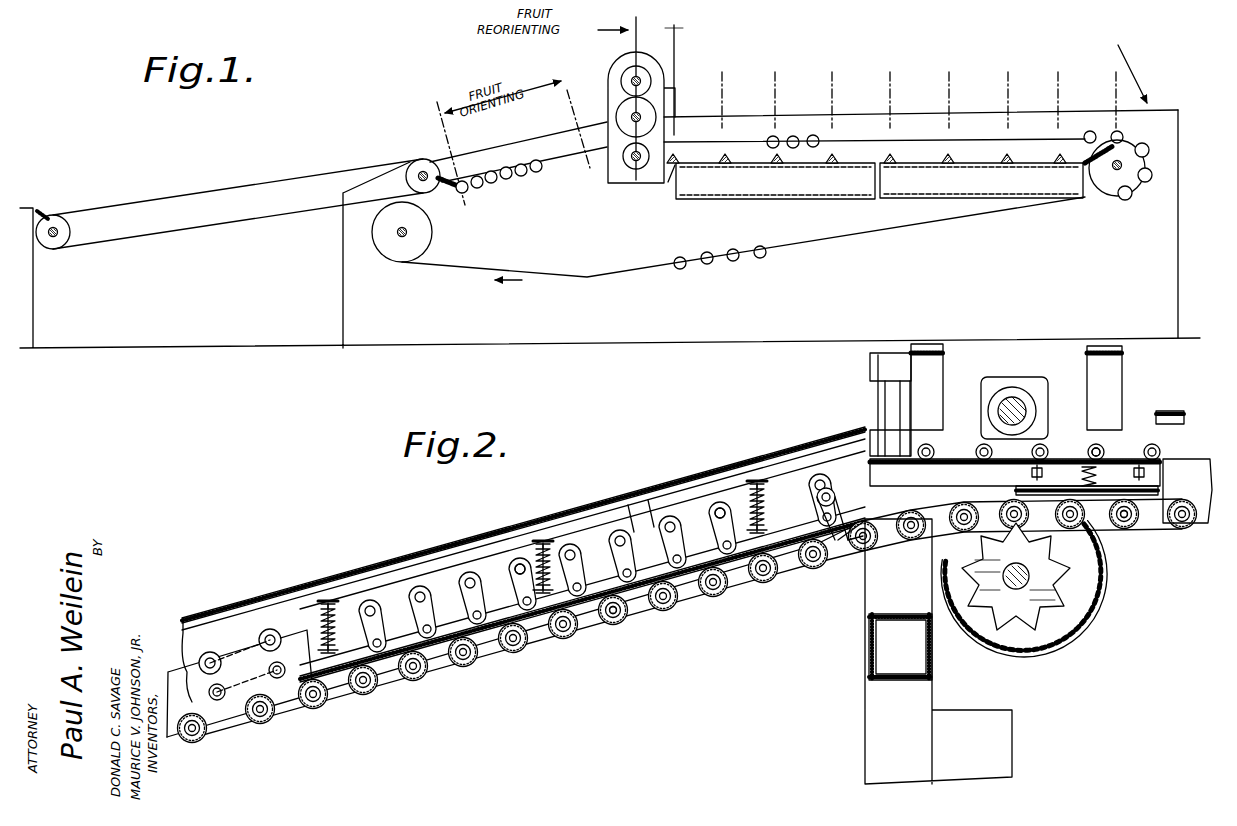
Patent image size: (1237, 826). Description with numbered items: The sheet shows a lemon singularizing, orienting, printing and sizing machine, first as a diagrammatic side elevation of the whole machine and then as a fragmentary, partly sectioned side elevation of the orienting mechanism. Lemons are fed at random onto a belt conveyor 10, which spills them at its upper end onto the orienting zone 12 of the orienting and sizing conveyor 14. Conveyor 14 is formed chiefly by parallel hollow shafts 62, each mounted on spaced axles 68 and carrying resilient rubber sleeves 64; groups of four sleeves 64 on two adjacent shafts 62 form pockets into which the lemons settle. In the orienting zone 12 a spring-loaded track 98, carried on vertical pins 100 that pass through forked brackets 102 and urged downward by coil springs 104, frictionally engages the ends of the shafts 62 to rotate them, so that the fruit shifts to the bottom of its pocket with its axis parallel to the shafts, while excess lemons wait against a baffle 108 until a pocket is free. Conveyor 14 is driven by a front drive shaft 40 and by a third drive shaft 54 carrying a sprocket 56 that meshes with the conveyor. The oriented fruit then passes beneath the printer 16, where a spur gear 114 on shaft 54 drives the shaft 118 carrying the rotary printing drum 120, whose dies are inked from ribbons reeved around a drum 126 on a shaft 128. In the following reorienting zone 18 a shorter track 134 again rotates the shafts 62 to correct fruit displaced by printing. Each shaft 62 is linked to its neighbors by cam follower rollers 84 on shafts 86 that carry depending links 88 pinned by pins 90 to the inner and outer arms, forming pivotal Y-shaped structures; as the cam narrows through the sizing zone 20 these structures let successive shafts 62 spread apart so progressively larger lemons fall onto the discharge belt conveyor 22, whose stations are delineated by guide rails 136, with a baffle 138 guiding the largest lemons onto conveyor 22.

In FIG. 1, the belt conveyor 10 is at (155, 197).
In FIG. 1, the orienting zone 12 is at (458, 140).
In FIG. 2, the orienting zone 12 is at (367, 523).
In FIG. 1, the orienting and sizing conveyor 14 is at (470, 262).
In FIG. 2, the orienting and sizing conveyor 14 is at (300, 714).
In FIG. 1, the printer 16 is at (608, 71).
In FIG. 1, the reorienting zone 18 is at (653, 32).
In FIG. 1, the sizing zone 20 is at (889, 52).
In FIG. 1, the discharge belt conveyor 22 is at (795, 200).
In FIG. 1, the front drive shaft 40 is at (410, 232).
In FIG. 1, the third drive shaft 54 is at (635, 160).
In FIG. 2, the third drive shaft 54 is at (1017, 582).
In FIG. 2, the sprocket 56 is at (1078, 576).
In FIG. 2, the hollow shaft 62 is at (352, 702).
In FIG. 1, the sleeve 64 is at (493, 184).
In FIG. 2, the axle 68 is at (610, 614).
In FIG. 2, the roller 84 is at (243, 630).
In FIG. 2, the shaft 86 is at (514, 568).
In FIG. 2, the link 88 is at (407, 617).
In FIG. 2, the pin 90 is at (834, 512).
In FIG. 2, the track 98 is at (533, 612).
In FIG. 2, the pin 100 is at (322, 600).
In FIG. 2, the bracket 102 is at (555, 544).
In FIG. 2, the coil spring 104 is at (307, 615).
In FIG. 1, the baffle 108 is at (452, 180).
In FIG. 2, the spur gear 114 is at (1096, 608).
In FIG. 1, the shaft 118 is at (630, 114).
In FIG. 2, the shaft 118 is at (998, 408).
In FIG. 1, the rotary printing drum 120 is at (623, 137).
In FIG. 1, the drum 126 is at (641, 73).
In FIG. 1, the shaft 128 is at (632, 78).
In FIG. 2, the track 134 is at (1148, 497).
In FIG. 1, the guide rail 136 is at (672, 180).
In FIG. 1, the baffle 138 is at (1107, 194).